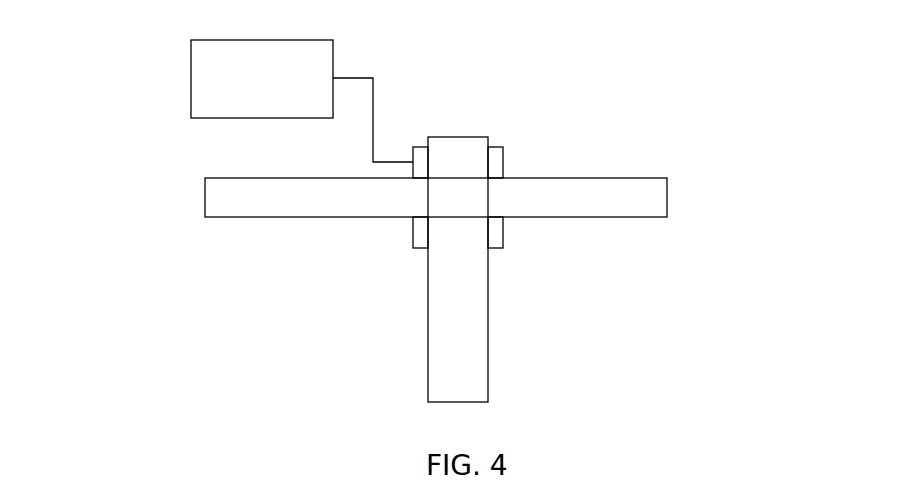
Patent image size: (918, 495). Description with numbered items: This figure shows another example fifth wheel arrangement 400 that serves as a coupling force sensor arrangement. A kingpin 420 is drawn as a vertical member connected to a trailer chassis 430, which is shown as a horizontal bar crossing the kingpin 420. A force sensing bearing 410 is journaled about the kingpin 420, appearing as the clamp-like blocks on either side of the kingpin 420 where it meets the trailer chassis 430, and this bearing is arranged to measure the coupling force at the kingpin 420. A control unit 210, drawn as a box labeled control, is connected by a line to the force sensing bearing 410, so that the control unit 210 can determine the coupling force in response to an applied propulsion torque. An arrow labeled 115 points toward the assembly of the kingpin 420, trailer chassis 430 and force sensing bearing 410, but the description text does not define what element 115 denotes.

The fifth wheel arrangement 400 is at (120, 80).
The gear mesh assembly 115 is at (735, 140).
The control unit 210 is at (302, 101).
The force sensing bearing 410 is at (497, 162).
The kingpin 420 is at (480, 287).
The trailer chassis 430 is at (651, 197).